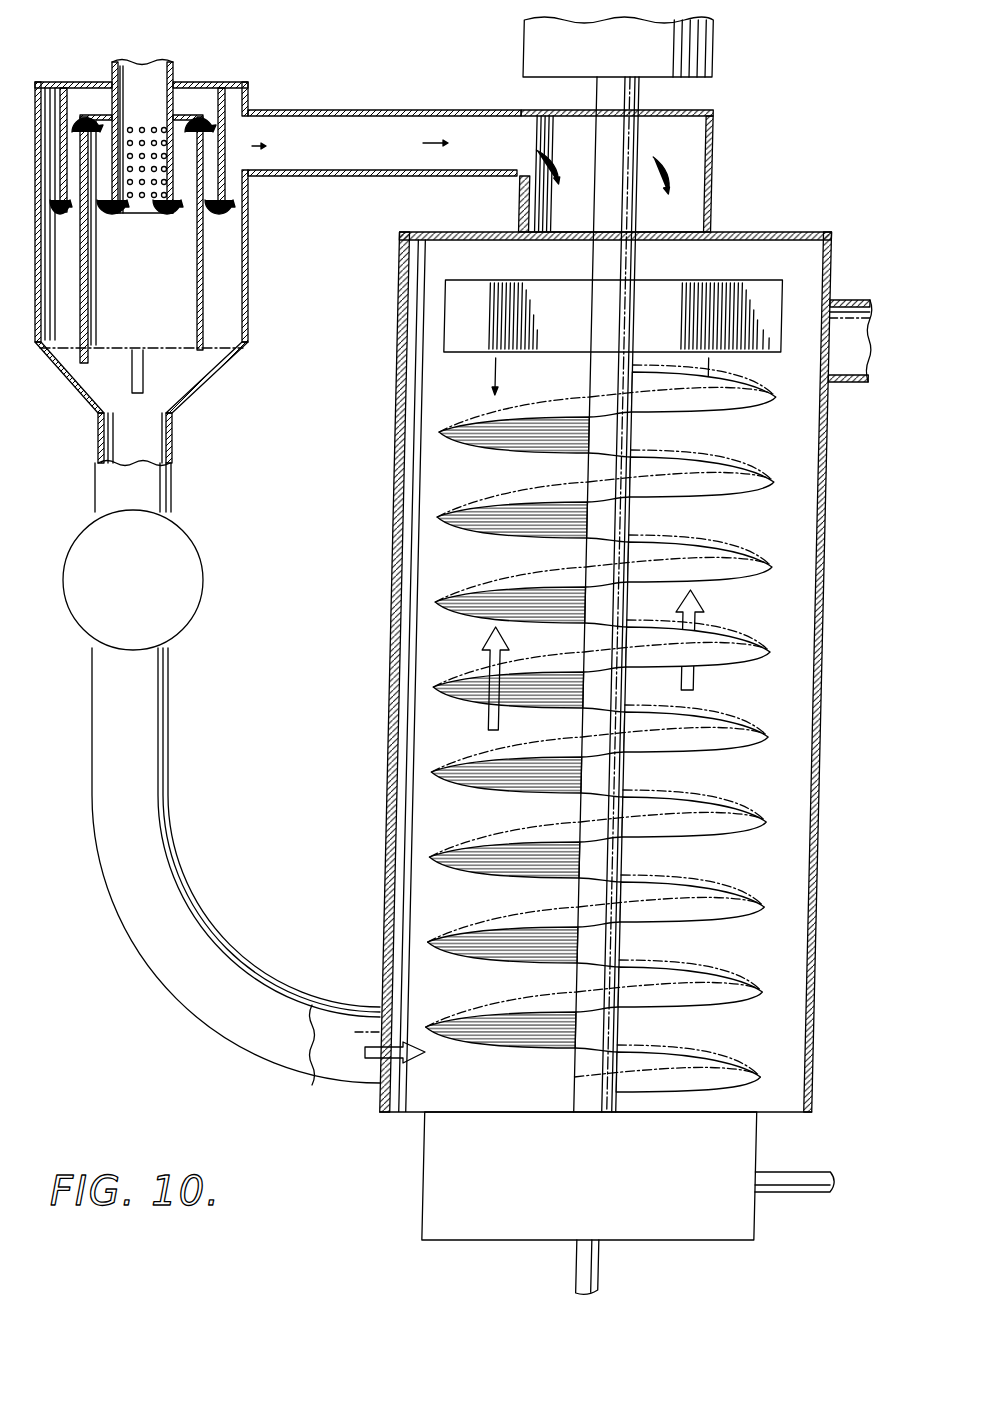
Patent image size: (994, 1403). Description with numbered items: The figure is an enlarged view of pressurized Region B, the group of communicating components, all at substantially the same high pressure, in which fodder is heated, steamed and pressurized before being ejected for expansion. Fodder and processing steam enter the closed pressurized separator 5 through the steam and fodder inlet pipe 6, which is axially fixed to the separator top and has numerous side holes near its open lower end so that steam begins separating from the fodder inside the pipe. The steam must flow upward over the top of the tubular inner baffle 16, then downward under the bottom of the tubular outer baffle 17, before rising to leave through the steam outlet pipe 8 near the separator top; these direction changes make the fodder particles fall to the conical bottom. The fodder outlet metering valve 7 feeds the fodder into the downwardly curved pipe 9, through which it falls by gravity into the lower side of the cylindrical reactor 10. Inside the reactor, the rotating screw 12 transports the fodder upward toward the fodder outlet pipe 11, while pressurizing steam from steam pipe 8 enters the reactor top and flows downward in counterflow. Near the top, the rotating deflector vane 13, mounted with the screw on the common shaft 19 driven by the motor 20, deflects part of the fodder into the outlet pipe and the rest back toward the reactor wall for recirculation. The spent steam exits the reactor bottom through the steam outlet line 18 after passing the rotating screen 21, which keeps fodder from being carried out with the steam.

The pressurized separator 5 is at (258, 303).
The steam and fodder inlet pipe 6 is at (176, 72).
The fodder outlet metering valve 7 is at (186, 566).
The steam outlet pipe 8 is at (380, 110).
The downwardly curved pipe 9 is at (155, 820).
The cylindrical reactor 10 is at (397, 765).
The fodder outlet pipe 11 is at (846, 300).
The rotating screw 12 is at (590, 594).
The rotating deflector vane 13 is at (505, 280).
The tubular inner baffle 16 is at (199, 276).
The tubular outer baffle 17 is at (222, 185).
The steam outlet line 18 is at (598, 1268).
The common shaft 19 is at (592, 441).
The motor 20 is at (528, 47).
The rotating screen 21 is at (450, 1163).
The pressurized Region B is at (96, 1053).